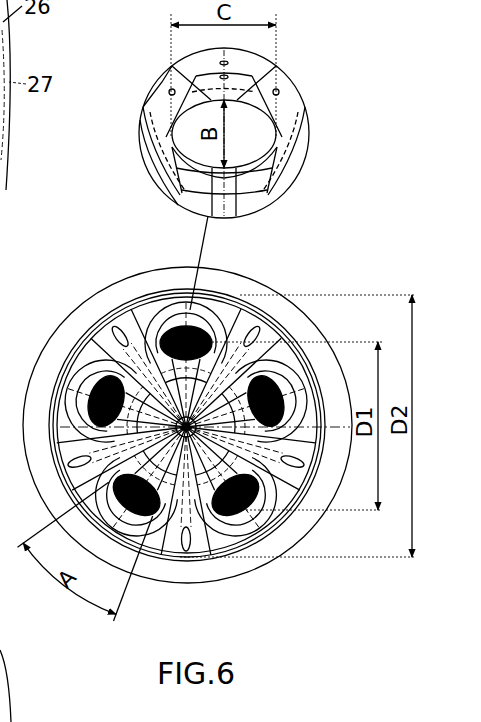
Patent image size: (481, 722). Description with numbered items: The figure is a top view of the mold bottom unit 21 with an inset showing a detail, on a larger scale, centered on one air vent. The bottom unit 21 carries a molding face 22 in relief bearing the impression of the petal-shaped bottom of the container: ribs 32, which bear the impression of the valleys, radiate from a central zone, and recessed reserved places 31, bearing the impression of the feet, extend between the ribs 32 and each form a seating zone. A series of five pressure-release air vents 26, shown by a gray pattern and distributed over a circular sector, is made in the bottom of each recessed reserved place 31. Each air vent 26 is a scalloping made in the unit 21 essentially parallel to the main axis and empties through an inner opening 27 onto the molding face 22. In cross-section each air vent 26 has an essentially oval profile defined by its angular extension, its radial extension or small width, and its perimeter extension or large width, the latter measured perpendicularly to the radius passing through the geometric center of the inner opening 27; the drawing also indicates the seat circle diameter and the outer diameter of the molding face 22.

The bottom unit 21 is at (242, 580).
The molding face 22 is at (297, 110).
The pressure-release air vent 26 is at (258, 146).
The inner opening 27 is at (263, 162).
The recessed reserved places 31 is at (163, 115).
The ribs 32 is at (150, 173).